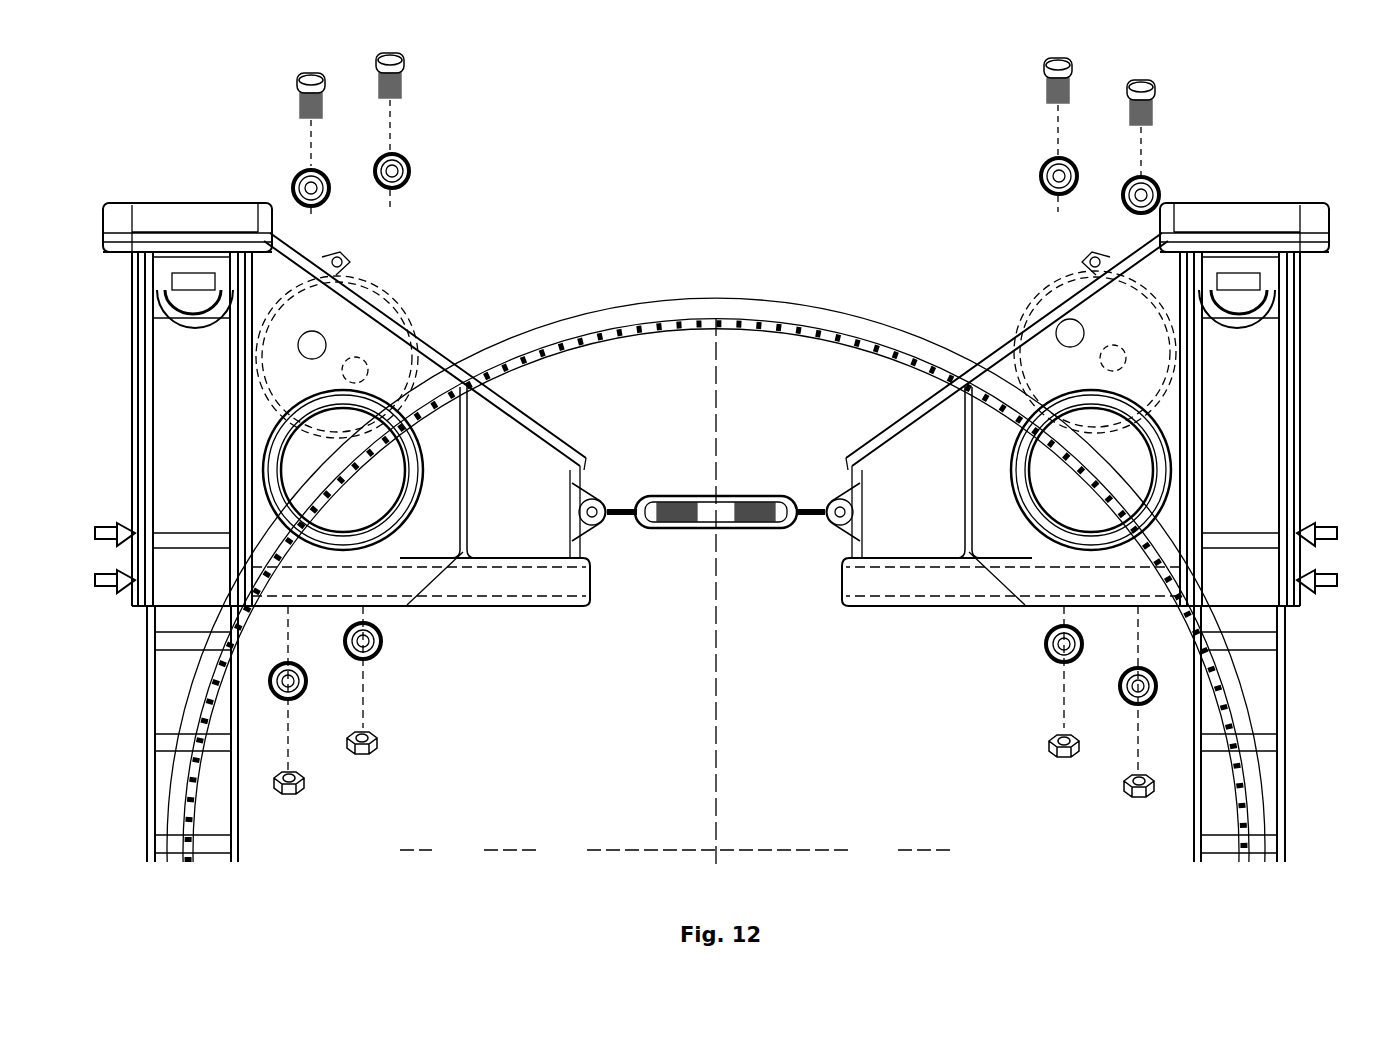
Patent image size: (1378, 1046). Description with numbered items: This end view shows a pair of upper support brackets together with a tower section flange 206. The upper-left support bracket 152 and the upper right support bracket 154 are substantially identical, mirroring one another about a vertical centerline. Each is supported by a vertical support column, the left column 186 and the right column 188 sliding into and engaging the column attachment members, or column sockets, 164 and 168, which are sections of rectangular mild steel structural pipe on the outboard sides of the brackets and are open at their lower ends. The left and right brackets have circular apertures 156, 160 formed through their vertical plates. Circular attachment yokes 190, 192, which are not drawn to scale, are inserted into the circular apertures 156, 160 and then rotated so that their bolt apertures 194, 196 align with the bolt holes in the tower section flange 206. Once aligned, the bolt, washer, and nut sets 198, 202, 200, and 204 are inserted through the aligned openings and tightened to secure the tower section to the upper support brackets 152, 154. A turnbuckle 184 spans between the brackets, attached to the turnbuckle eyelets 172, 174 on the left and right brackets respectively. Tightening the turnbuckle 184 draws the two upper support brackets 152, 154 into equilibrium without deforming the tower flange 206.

The upper-left support bracket 152 is at (527, 607).
The upper right support bracket 154 is at (905, 607).
The circular aperture 156 is at (412, 490).
The circular aperture 160 is at (1030, 495).
The column attachment member 164 is at (130, 407).
The column attachment member 168 is at (1303, 437).
The turnbuckle eyelet 172 is at (594, 538).
The turnbuckle eyelet 174 is at (838, 538).
The turnbuckle 184 is at (710, 497).
The vertical support column 186 is at (148, 775).
The vertical support column 188 is at (1287, 720).
The circular attachment yoke 190 is at (385, 290).
The circular attachment yoke 192 is at (1045, 285).
The bolt apertures 194 is at (368, 365).
The bolt apertures 196 is at (1100, 358).
The bolt, washer, and nut set 198 is at (318, 172).
The bolt, washer, and nut set 200 is at (1045, 160).
The bolt, washer, and nut set 202 is at (379, 738).
The bolt, washer, and nut set 204 is at (1125, 775).
The tower section flange 206 is at (720, 296).